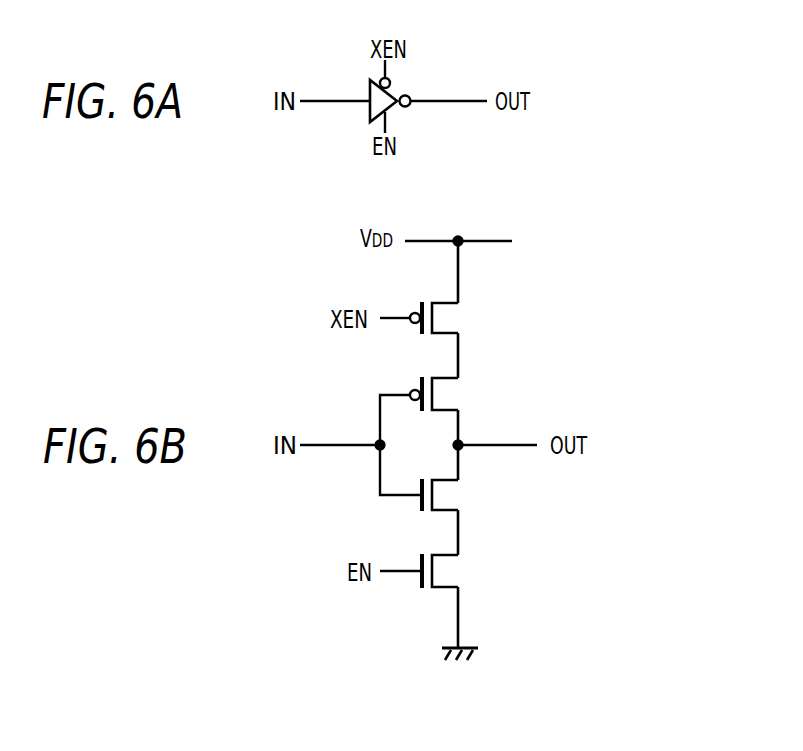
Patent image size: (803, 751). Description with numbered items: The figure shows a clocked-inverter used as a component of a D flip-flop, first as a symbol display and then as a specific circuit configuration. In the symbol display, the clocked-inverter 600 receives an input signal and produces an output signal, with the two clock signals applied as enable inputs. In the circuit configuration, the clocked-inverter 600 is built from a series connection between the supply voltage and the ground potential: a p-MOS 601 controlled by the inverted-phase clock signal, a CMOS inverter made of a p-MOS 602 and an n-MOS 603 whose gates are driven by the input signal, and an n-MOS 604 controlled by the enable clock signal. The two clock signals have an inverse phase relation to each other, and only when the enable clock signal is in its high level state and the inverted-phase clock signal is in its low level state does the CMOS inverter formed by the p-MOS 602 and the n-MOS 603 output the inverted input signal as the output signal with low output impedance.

In FIG. 6A, the clocked-inverter 600 is at (370, 95).
In FIG. 6B, the p-MOS 601 is at (420, 305).
In FIG. 6B, the p-MOS 602 is at (420, 380).
In FIG. 6B, the n-MOS 603 is at (421, 508).
In FIG. 6B, the n-MOS 604 is at (421, 585).